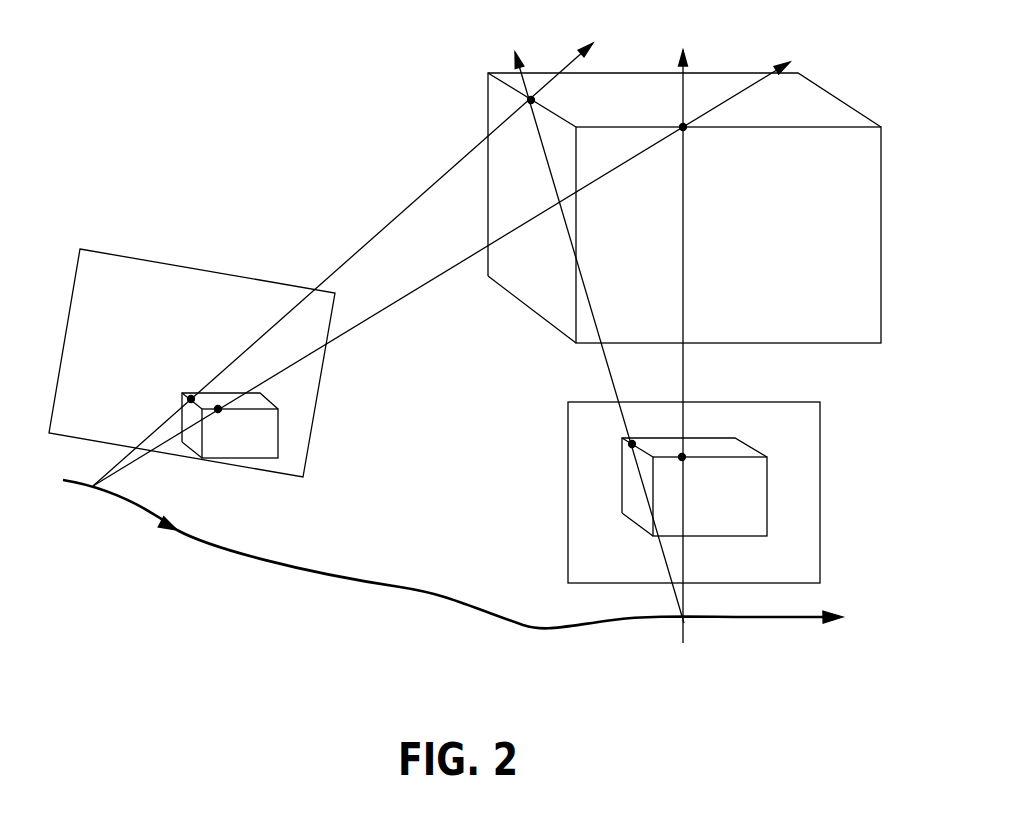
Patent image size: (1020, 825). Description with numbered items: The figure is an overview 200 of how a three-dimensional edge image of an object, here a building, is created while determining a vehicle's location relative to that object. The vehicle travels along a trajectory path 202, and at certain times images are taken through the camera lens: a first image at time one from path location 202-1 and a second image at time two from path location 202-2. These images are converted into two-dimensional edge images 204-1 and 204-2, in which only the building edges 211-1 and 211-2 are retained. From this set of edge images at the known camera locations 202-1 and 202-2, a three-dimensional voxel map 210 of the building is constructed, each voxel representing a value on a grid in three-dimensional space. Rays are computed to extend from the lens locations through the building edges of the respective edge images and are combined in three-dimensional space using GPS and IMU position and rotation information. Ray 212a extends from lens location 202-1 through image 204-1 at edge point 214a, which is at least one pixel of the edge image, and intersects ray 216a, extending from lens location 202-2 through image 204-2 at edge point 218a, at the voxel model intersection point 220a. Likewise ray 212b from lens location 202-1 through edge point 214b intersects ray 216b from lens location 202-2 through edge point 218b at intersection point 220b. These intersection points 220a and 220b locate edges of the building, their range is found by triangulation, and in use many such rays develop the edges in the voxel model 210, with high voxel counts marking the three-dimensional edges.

The overview of creating a 3D edge image 200 is at (140, 105).
The path 202 is at (477, 608).
The path location 202-1 is at (85, 480).
The path location 202-2 is at (683, 640).
The 2D edge image 204-1 is at (82, 308).
The 2D edge image 204-2 is at (580, 470).
The 3D voxel map 210 is at (865, 268).
The building edges 211-1 is at (253, 460).
The building edges 211-2 is at (767, 494).
The ray 212a is at (362, 247).
The ray 212b is at (427, 283).
The edge point 214a is at (191, 399).
The edge point 214b is at (218, 409).
The ray 216a is at (600, 347).
The ray 216b is at (685, 353).
The edge point 218a is at (631, 447).
The edge point 218b is at (682, 457).
The 3D voxel model intersection point 220a is at (523, 98).
The 3D voxel model intersection point 220b is at (683, 127).